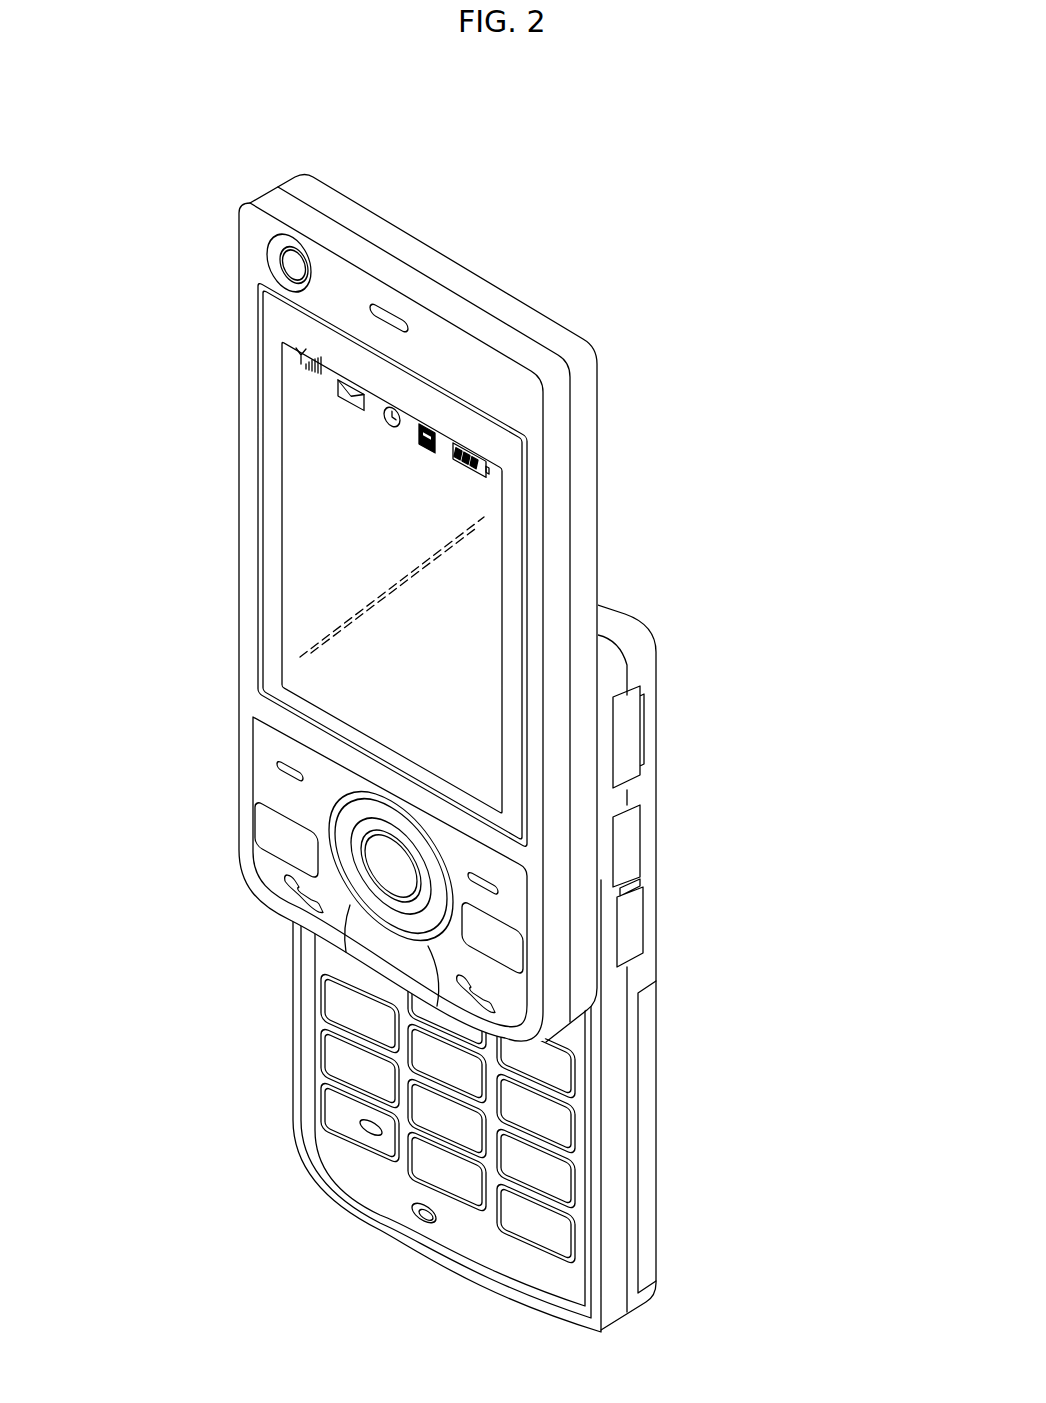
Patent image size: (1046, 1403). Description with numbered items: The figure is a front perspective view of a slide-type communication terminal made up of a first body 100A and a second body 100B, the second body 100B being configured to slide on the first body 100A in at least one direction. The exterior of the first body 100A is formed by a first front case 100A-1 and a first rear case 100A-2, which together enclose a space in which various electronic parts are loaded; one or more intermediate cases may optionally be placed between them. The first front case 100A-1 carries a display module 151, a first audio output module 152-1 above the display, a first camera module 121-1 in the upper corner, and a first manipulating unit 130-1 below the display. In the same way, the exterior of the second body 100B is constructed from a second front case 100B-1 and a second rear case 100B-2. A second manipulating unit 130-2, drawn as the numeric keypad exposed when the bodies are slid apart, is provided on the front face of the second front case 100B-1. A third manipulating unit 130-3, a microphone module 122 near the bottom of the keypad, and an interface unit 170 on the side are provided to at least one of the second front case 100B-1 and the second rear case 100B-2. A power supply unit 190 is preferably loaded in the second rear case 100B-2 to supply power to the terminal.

The first body 100A is at (197, 374).
The first front case 100A-1 is at (568, 481).
The first rear case 100A-2 is at (587, 430).
The second body 100B is at (291, 1024).
The second front case 100B-1 is at (610, 657).
The second rear case 100B-2 is at (643, 688).
The first camera module 121-1 is at (298, 263).
The microphone module 122 is at (423, 1224).
The first manipulating unit 130-1 is at (273, 807).
The second manipulating unit 130-2 is at (330, 1097).
The third manipulating unit 130-3 is at (637, 922).
The display module 151 is at (298, 495).
The first audio output module 152-1 is at (390, 310).
The interface unit 170 is at (632, 733).
The power supply unit 190 is at (647, 1115).